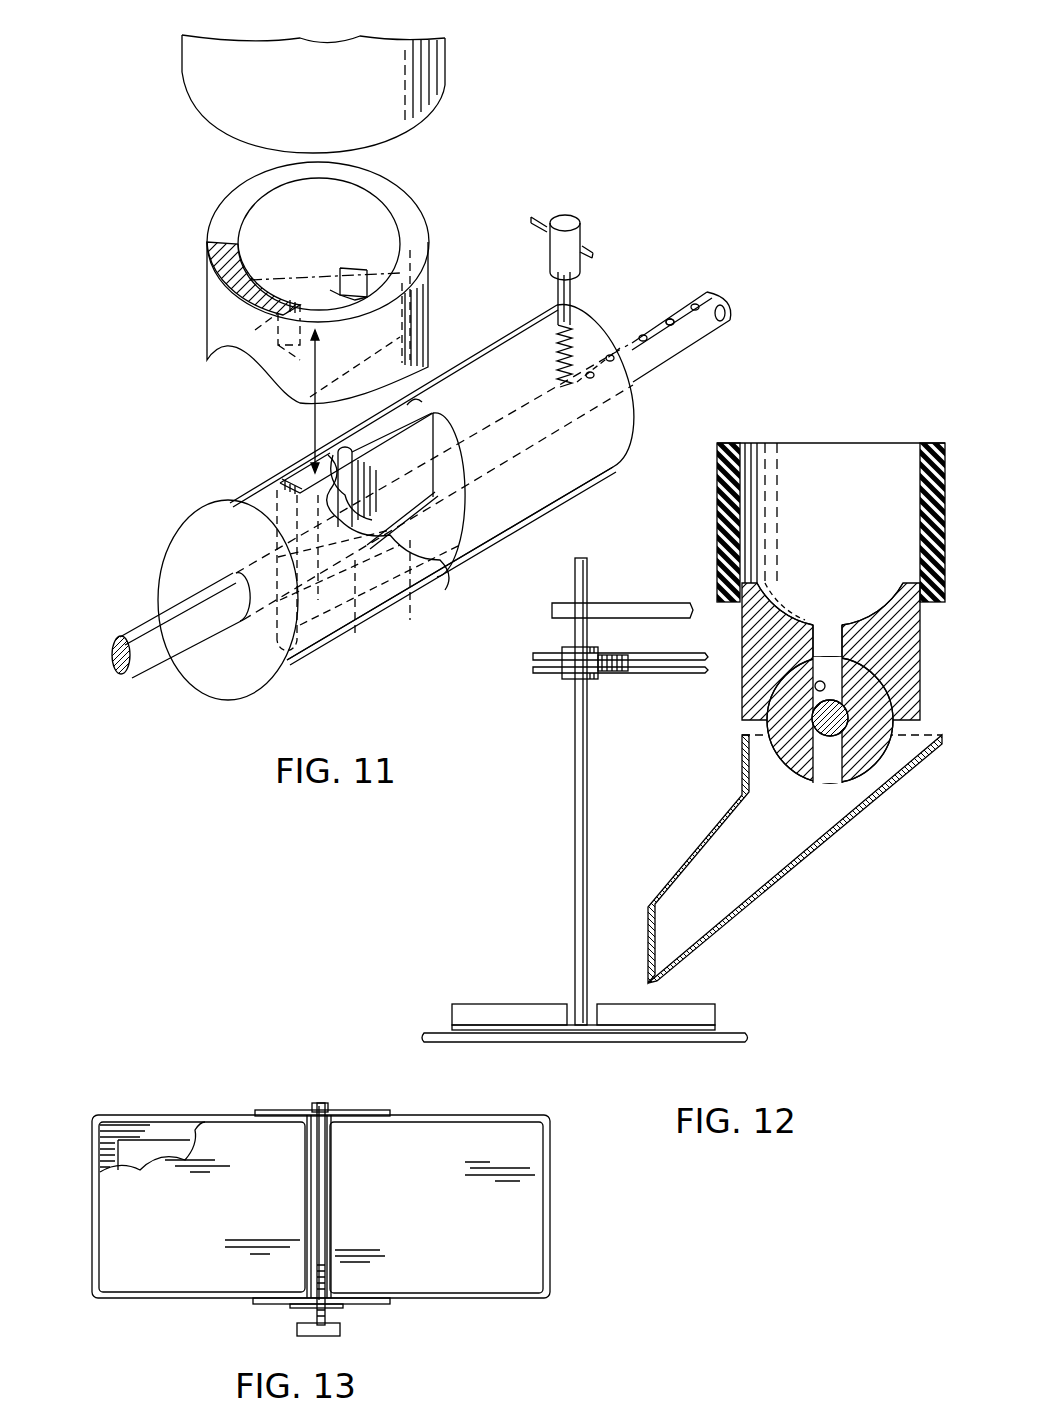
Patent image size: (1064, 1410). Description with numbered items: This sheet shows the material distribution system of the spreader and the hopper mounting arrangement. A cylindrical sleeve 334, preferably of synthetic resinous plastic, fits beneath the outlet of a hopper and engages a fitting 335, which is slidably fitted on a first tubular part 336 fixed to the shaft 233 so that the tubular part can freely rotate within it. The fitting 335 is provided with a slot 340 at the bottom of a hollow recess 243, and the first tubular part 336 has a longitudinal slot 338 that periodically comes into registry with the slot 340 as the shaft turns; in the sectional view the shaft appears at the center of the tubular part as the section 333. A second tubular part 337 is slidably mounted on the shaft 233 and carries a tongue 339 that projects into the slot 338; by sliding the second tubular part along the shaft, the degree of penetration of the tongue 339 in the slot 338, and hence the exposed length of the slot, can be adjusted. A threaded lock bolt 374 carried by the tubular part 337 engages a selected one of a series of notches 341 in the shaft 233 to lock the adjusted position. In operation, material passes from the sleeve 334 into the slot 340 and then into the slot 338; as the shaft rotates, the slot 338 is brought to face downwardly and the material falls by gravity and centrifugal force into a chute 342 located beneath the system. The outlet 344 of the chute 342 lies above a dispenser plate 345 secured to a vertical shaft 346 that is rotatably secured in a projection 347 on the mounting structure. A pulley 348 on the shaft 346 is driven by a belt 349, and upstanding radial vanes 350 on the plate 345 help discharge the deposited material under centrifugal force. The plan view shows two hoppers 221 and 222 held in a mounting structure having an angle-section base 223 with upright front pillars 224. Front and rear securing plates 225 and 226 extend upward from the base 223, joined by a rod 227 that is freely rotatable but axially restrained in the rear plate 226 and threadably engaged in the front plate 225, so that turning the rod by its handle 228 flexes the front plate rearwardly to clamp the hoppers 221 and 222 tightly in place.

In FIG. 11, the cylindrical sleeve 334 is at (407, 110).
In FIG. 12, the cylindrical sleeve 334 is at (718, 520).
In FIG. 11, the fitting 335 is at (428, 283).
In FIG. 12, the fitting 335 is at (913, 665).
In FIG. 11, the bowl cavity 243 is at (328, 242).
In FIG. 12, the bowl cavity 243 is at (798, 597).
In FIG. 11, the slot 340 is at (322, 283).
In FIG. 12, the slot 340 is at (840, 630).
In FIG. 11, the second tubular part 337 is at (508, 348).
In FIG. 11, the longitudinal slot 338 is at (313, 470).
In FIG. 12, the longitudinal slot 338 is at (815, 682).
In FIG. 11, the tongue 339 is at (407, 423).
In FIG. 11, the first tubular part 336 is at (252, 493).
In FIG. 12, the first tubular part 336 is at (867, 767).
In FIG. 11, the shaft 233 is at (152, 660).
In FIG. 11, the notches 341 is at (668, 317).
In FIG. 11, the threaded lock bolt 374 is at (580, 232).
In FIG. 12, the bore 333 is at (830, 740).
In FIG. 12, the chute 342 is at (693, 852).
In FIG. 12, the outlet 344 is at (658, 943).
In FIG. 12, the dispenser plate 345 is at (680, 1022).
In FIG. 12, the vertical shaft 346 is at (577, 823).
In FIG. 12, the projection 347 is at (638, 612).
In FIG. 12, the pulley 348 is at (558, 665).
In FIG. 12, the belt 349 is at (655, 663).
In FIG. 12, the radial vanes 350 is at (503, 1015).
In FIG. 13, the front pillars 224 is at (93, 1137).
In FIG. 13, the hopper 221 is at (233, 1212).
In FIG. 13, the hopper 222 is at (453, 1213).
In FIG. 13, the base 223 is at (158, 1117).
In FIG. 13, the rear securing plate 226 is at (290, 1112).
In FIG. 13, the front securing plate 225 is at (270, 1300).
In FIG. 13, the rod 227 is at (318, 1180).
In FIG. 13, the handle 228 is at (328, 1328).